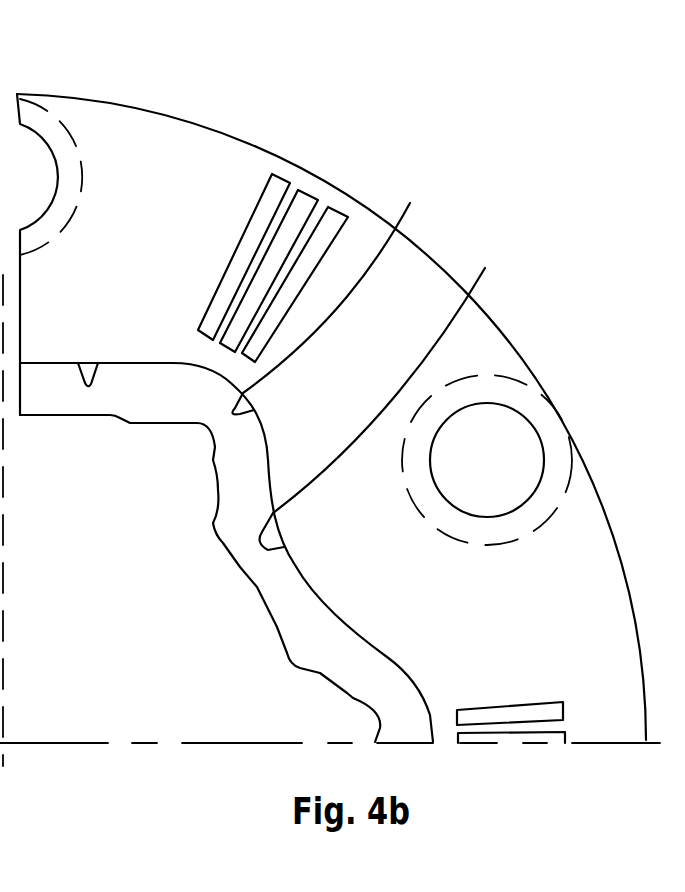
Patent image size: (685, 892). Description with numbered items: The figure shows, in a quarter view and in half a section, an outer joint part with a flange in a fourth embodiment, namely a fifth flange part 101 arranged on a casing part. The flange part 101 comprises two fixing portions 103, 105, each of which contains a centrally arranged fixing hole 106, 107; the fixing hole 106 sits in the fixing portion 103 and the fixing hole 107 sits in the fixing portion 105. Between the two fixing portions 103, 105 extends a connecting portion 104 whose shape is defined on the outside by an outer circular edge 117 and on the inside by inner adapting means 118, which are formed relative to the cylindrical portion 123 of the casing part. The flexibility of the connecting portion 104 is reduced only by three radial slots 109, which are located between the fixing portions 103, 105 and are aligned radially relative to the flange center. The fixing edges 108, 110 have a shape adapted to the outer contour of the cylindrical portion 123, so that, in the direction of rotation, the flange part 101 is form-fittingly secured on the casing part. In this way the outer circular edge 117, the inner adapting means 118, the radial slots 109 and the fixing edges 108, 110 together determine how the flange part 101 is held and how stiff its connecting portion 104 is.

The fifth flange part 101 is at (375, 172).
The fixing portion 103 is at (478, 358).
The connecting portion 104 is at (298, 185).
The fixing portion 105 is at (97, 140).
The fixing hole 106 is at (518, 423).
The fixing hole 107 is at (30, 148).
The fixing edge 108 is at (389, 392).
The radial slot 109 is at (305, 203).
The fixing edge 110 is at (98, 363).
The outer circular edge 117 is at (248, 143).
The inner adapting means 118 is at (336, 293).
The cylindrical portion 123 is at (168, 383).